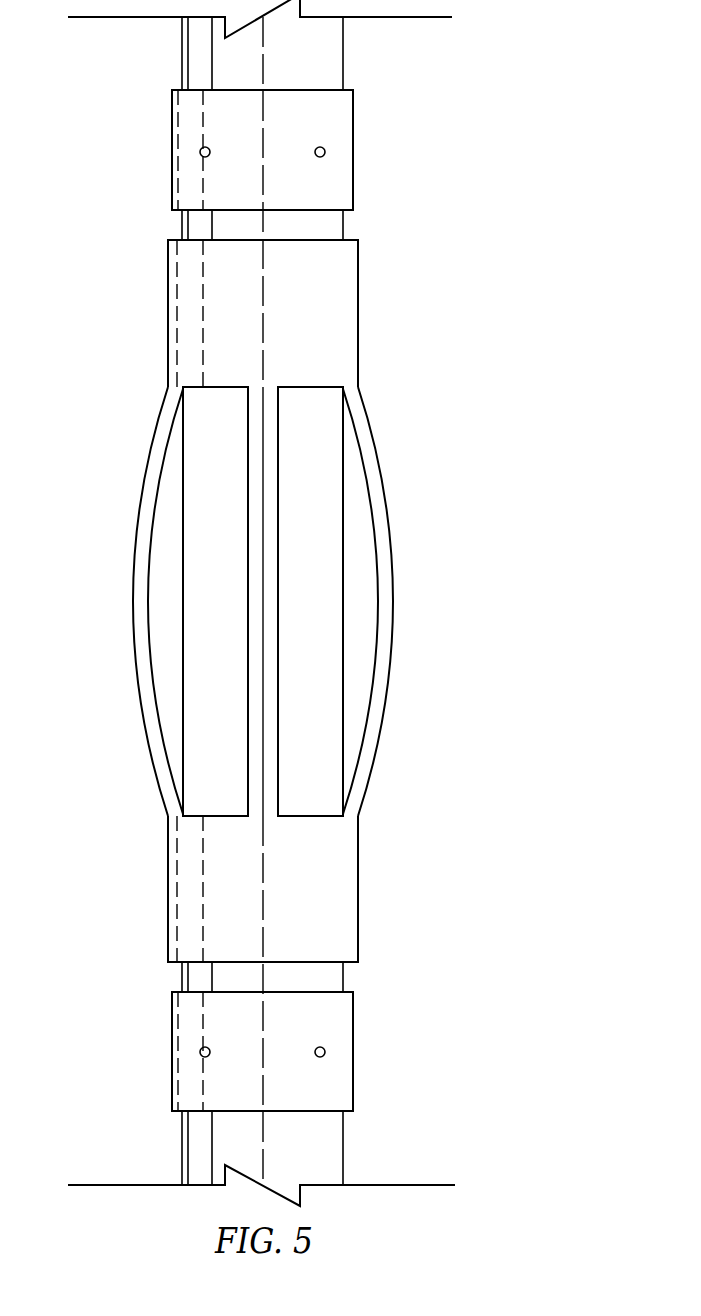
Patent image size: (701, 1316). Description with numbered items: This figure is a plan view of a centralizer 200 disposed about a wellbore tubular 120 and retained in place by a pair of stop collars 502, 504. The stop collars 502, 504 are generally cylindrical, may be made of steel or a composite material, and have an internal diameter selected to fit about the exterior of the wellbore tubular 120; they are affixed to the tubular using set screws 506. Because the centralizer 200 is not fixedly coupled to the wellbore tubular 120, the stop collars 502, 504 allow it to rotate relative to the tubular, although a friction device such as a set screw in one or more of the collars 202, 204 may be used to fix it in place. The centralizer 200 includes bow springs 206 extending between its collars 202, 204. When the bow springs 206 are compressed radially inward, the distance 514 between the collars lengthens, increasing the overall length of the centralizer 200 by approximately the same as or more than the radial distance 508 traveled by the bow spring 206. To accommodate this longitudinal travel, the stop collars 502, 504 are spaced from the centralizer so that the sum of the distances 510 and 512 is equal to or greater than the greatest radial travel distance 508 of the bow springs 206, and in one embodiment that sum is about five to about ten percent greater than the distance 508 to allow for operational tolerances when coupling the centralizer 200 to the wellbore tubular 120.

The wellbore tubular 120 is at (343, 52).
The centralizer 200 is at (472, 270).
The collar 202 is at (168, 885).
The collar 204 is at (168, 303).
The bow spring 206 is at (378, 468).
The stop collar 502 is at (353, 105).
The stop collar 504 is at (353, 1020).
The set screw 506 is at (201, 156).
The radial distance 508 is at (312, 602).
The distance 510 is at (148, 183).
The distance 512 is at (148, 935).
The distance 514 is at (168, 816).